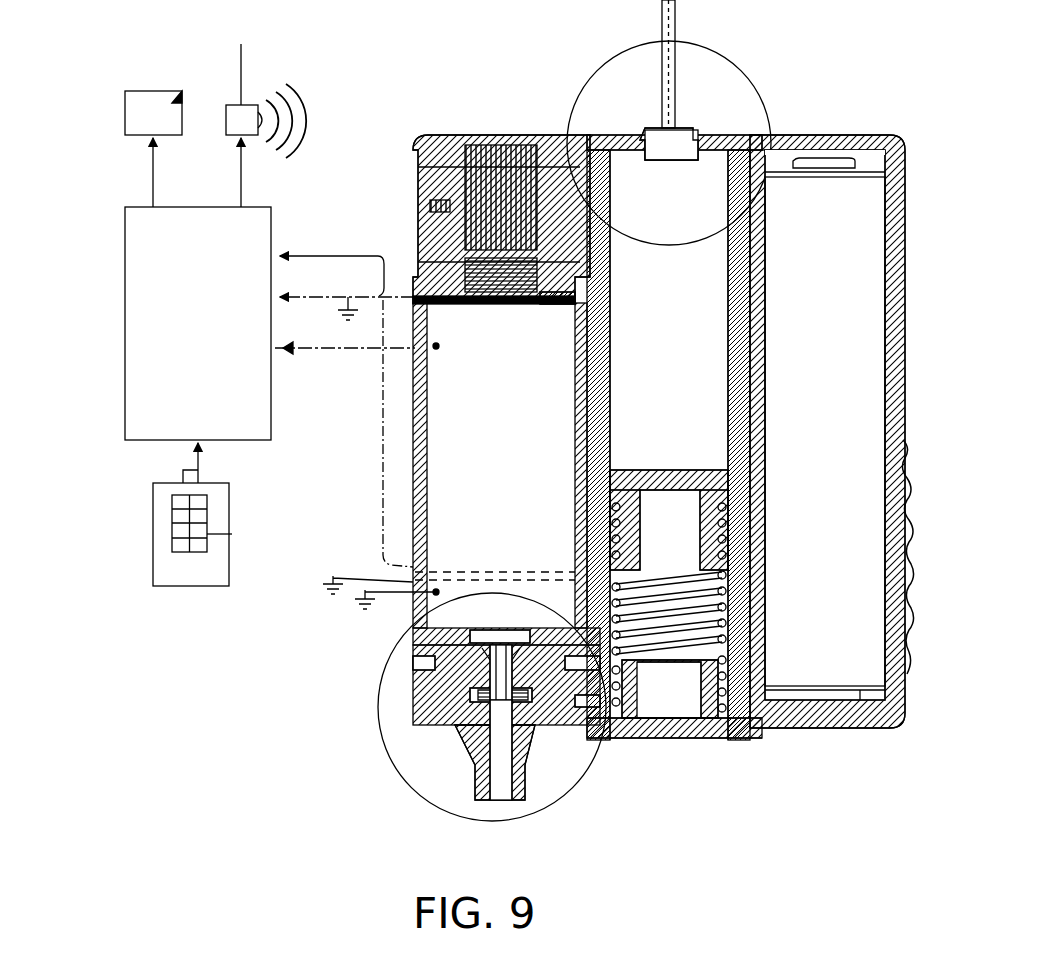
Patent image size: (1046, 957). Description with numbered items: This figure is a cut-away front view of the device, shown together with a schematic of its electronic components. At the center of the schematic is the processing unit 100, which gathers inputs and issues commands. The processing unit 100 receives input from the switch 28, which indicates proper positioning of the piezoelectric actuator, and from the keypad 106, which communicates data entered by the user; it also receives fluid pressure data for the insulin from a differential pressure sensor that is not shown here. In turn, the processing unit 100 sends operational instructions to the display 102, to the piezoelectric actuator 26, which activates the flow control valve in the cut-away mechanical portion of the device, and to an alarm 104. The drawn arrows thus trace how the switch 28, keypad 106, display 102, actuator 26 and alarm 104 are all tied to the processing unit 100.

The piezoelectric actuator 26 is at (477, 410).
The switch 28 is at (507, 308).
The processing unit 100 is at (155, 296).
The display 102 is at (138, 106).
The alarm 104 is at (266, 117).
The keypad 106 is at (168, 570).